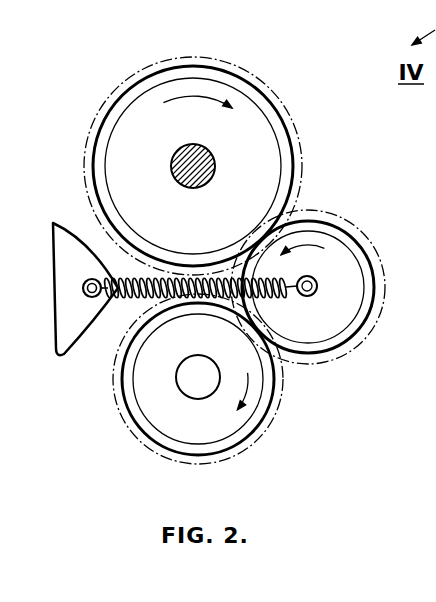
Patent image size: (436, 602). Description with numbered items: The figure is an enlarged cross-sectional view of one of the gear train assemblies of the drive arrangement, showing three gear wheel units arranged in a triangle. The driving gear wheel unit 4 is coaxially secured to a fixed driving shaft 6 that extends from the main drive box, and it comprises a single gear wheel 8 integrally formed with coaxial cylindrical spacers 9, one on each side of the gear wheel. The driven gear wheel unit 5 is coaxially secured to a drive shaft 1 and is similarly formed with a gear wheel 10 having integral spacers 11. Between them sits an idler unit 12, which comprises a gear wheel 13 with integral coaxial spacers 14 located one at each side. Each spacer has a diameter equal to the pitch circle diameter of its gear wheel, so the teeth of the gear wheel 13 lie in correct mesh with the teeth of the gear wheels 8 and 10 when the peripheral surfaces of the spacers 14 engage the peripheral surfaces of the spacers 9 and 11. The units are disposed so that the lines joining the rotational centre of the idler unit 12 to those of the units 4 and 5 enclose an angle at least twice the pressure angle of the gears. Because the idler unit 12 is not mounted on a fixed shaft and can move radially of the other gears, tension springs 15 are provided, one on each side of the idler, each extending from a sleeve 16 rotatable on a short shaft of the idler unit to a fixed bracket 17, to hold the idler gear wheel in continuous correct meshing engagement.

The drive shaft 1 is at (197, 355).
The driving gear wheel unit 4 is at (247, 130).
The driven gear wheel unit 5 is at (253, 403).
The fixed driving shaft 6 is at (207, 163).
The gear wheel 8 is at (223, 62).
The cylindrical spacers 9 is at (285, 128).
The gear wheel 10 is at (167, 457).
The spacers 11 is at (130, 410).
The idler unit 12 is at (342, 260).
The gear wheel 13 is at (385, 297).
The coaxial spacers 14 is at (335, 220).
The tension springs 15 is at (135, 297).
The sleeve 16 is at (315, 288).
The fixed bracket 17 is at (67, 247).